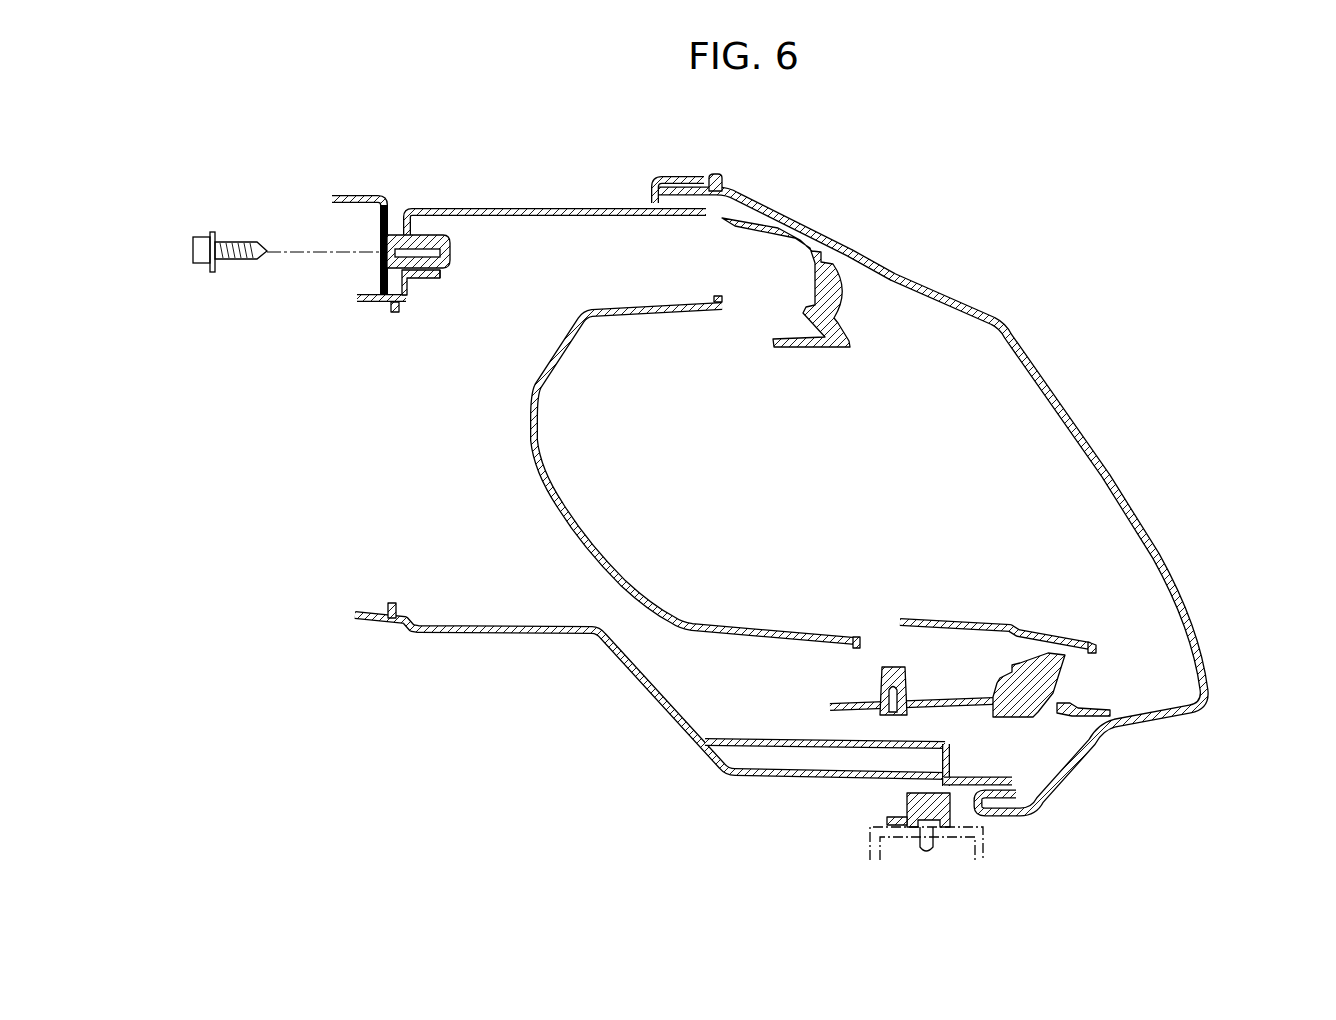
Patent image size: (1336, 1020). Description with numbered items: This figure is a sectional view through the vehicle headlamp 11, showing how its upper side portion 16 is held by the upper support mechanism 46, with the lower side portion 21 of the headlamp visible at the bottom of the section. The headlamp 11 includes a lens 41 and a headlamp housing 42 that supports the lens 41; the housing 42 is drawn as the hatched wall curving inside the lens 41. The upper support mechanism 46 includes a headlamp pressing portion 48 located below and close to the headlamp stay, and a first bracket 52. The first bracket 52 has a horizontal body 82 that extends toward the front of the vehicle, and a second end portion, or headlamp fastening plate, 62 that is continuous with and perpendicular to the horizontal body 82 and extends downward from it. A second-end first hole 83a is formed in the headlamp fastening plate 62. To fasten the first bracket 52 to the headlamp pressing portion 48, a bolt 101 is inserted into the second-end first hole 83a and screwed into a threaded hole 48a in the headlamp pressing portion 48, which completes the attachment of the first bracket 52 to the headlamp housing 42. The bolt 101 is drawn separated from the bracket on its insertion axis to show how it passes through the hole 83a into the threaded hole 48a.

The vehicle headlamp 11 is at (931, 213).
The upper side portion 16 is at (585, 208).
The lower side portion 21 is at (905, 800).
The lens 41 is at (1048, 386).
The headlamp housing 42 is at (538, 438).
The upper support mechanism 46 is at (333, 166).
The headlamp pressing portion 48 is at (406, 287).
The threaded hole 48a is at (421, 276).
The first bracket 52 is at (386, 198).
The second end portion (headlamp fastening plate) 62 is at (378, 280).
The horizontal body 82 is at (351, 194).
The second-end first hole 83a is at (386, 256).
The bolt 101 is at (202, 268).